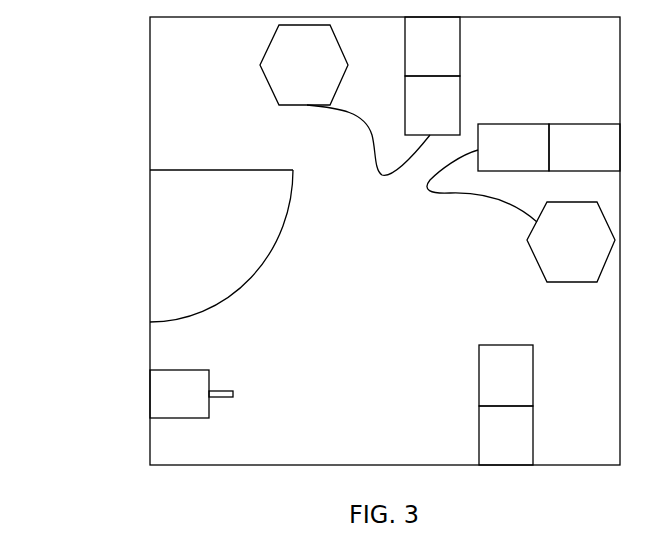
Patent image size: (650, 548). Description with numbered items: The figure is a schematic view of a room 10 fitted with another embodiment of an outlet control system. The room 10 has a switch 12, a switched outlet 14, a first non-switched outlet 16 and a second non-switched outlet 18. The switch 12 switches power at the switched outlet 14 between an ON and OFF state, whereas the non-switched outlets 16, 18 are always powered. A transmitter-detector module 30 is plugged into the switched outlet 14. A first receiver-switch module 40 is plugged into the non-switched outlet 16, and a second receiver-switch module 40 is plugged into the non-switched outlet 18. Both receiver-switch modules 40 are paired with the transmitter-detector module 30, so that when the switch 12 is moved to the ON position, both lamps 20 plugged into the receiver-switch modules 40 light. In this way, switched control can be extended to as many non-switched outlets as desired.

The room 10 is at (150, 107).
The switch 12 is at (191, 394).
The switched outlet 14 is at (506, 435).
The first non-switched outlet 16 is at (584, 147).
The second non-switched outlet 18 is at (432, 46).
The lamp 20 is at (437, 153).
The transmitter-detector module 30 is at (506, 375).
The receiver-switch module 40 is at (428, 149).